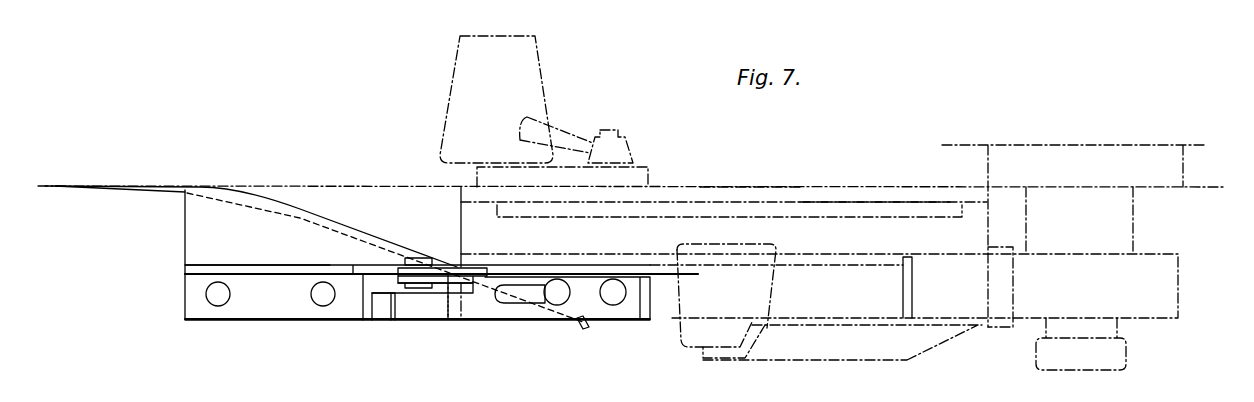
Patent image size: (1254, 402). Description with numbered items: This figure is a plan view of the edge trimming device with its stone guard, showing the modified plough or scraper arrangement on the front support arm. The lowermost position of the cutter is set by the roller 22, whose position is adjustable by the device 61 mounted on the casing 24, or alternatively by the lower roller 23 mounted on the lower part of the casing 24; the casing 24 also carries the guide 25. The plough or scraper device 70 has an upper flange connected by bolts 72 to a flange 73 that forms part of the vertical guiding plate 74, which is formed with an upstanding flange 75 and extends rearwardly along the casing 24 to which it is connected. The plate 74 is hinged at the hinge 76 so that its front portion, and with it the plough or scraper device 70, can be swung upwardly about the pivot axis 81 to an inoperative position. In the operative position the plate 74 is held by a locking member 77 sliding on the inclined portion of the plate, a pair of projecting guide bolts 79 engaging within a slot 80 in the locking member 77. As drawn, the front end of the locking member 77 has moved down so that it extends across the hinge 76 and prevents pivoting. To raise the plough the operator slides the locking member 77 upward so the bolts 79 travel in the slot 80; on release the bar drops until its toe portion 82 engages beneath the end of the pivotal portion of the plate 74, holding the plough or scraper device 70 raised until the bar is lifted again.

The roller 22 is at (465, 95).
The device 61 is at (616, 117).
The plough or scraper device 70 is at (295, 205).
The pivot axis 81 is at (422, 258).
The casing 24 is at (762, 190).
The guide rail 25 is at (882, 207).
The upstanding flange 75 is at (225, 265).
The vertical guiding plate 74 is at (210, 326).
The bolts 72 is at (220, 300).
The flange 73 is at (280, 305).
The toe portion 82 is at (385, 310).
The locking member 77 is at (430, 305).
The hinge 76 is at (453, 310).
The slot 80 is at (515, 303).
The projecting guide bolts 79 is at (613, 298).
The lower roller 23 is at (690, 330).